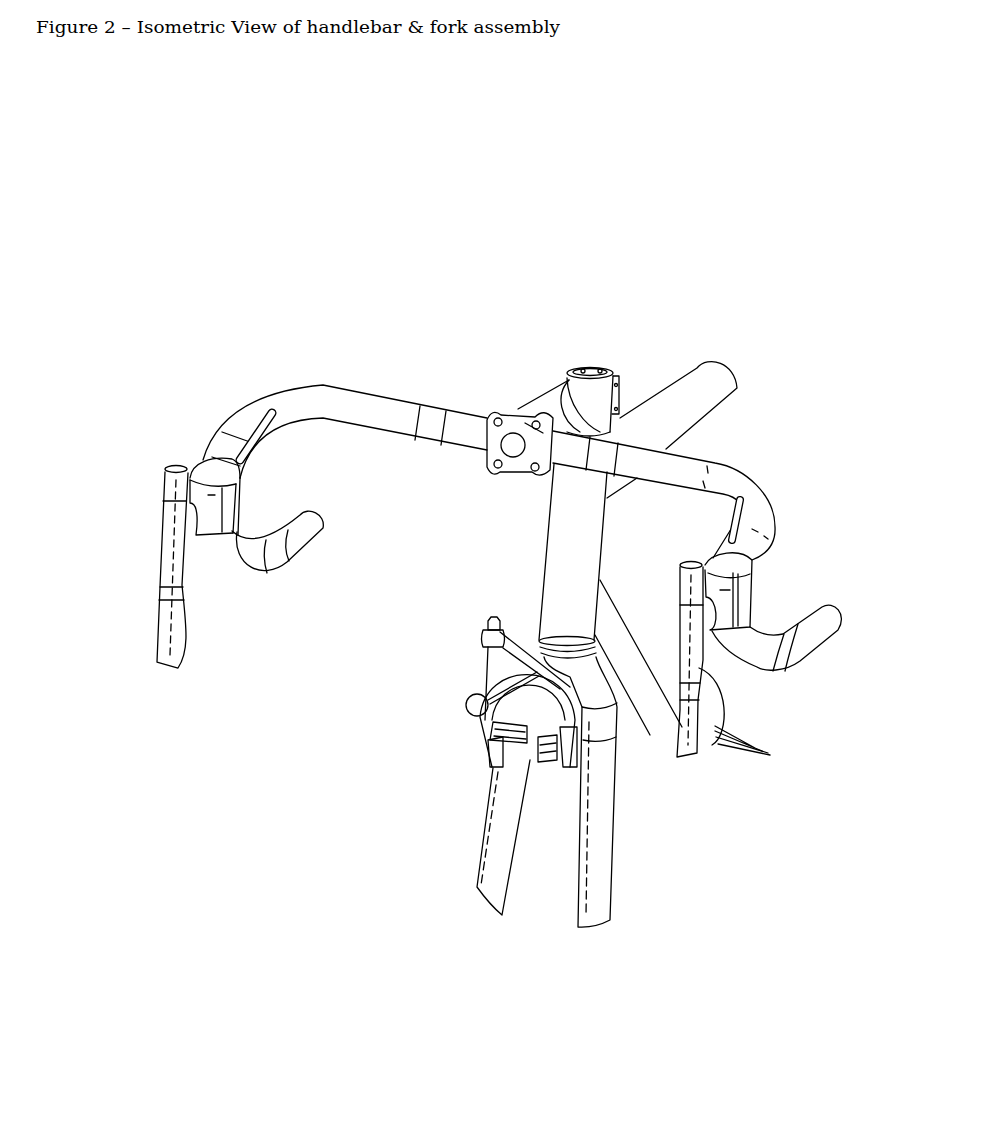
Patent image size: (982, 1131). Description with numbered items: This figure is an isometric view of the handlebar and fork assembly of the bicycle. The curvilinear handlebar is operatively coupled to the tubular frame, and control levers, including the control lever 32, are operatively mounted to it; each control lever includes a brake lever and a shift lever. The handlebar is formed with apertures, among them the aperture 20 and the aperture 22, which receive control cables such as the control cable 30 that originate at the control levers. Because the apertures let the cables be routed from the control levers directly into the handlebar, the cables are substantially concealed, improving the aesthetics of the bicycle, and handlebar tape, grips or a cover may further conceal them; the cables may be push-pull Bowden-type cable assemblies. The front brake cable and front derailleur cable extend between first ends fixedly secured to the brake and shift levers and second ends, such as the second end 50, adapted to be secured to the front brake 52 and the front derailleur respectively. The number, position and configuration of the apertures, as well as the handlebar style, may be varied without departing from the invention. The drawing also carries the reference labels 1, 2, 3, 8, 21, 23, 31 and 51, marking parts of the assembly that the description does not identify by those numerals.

The handlebar 1 is at (327, 388).
The right brake lever 2 is at (693, 747).
The left brake lever 3 is at (180, 645).
The stem faceplate clamp 8 is at (478, 465).
The aperture 20 is at (255, 432).
The lever hood attachment 21 is at (782, 767).
The aperture 22 is at (753, 743).
The lever hood 23 is at (798, 770).
The control cable 30 is at (557, 535).
The stem extension tube 31 is at (712, 393).
The control lever 32 is at (663, 713).
The second end 50 is at (563, 365).
The stem cap bolts 51 is at (582, 365).
The front brake 52 is at (622, 400).